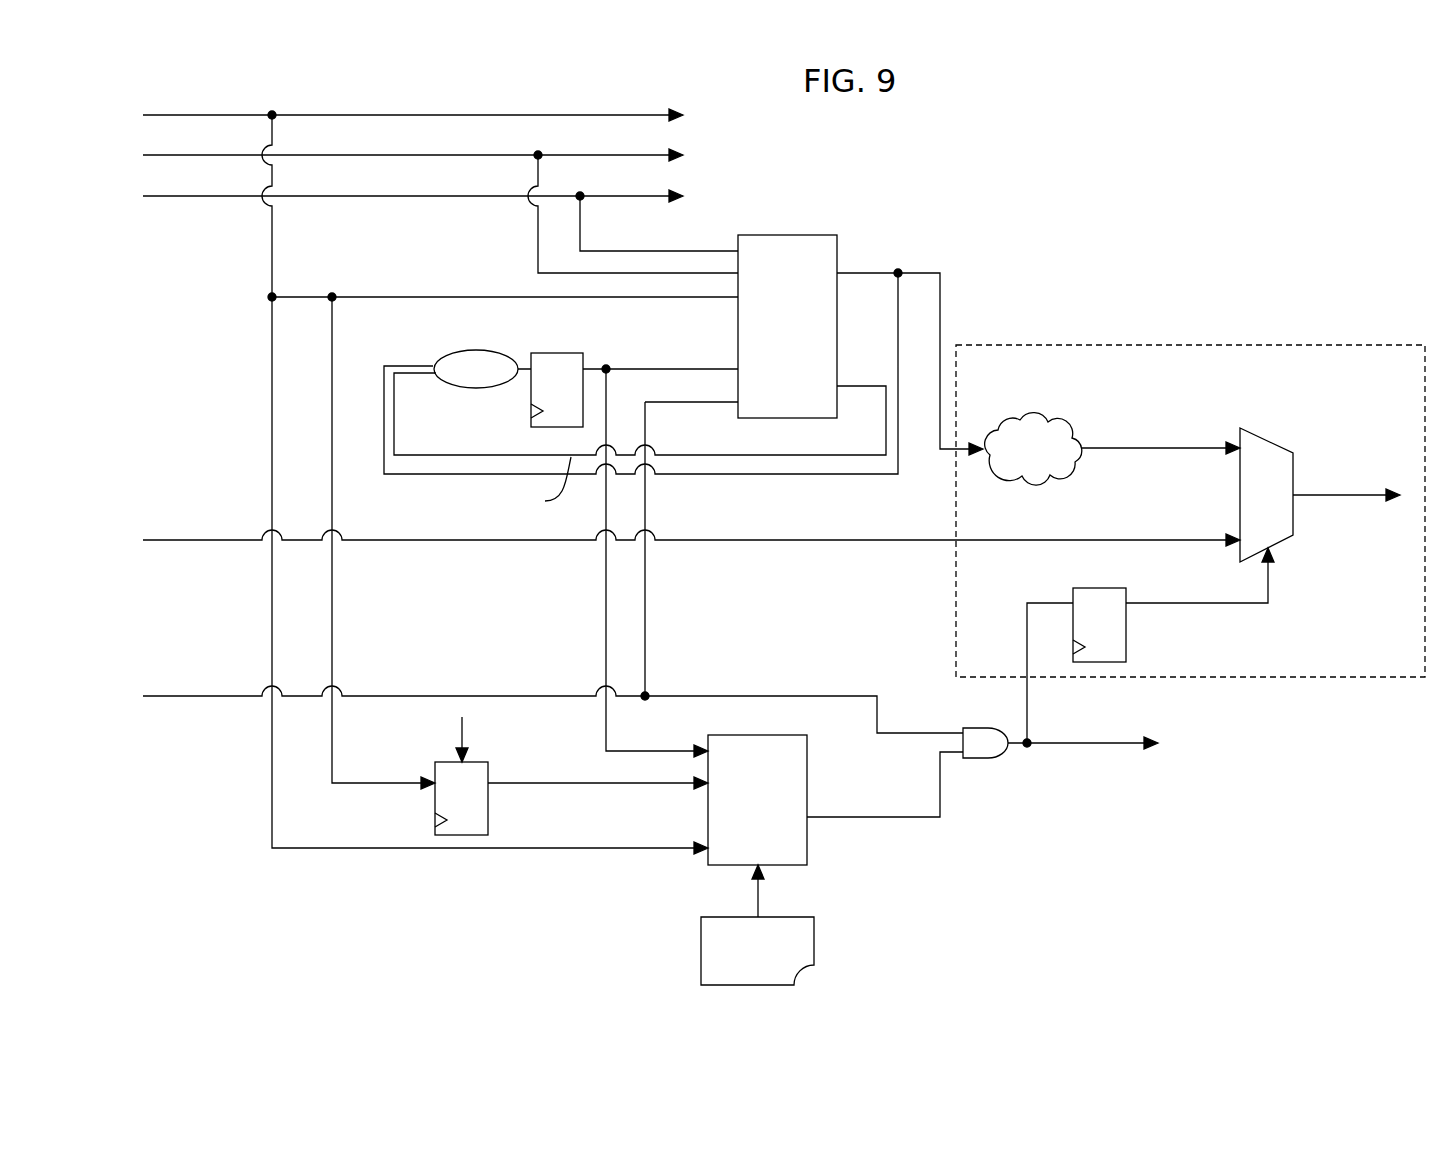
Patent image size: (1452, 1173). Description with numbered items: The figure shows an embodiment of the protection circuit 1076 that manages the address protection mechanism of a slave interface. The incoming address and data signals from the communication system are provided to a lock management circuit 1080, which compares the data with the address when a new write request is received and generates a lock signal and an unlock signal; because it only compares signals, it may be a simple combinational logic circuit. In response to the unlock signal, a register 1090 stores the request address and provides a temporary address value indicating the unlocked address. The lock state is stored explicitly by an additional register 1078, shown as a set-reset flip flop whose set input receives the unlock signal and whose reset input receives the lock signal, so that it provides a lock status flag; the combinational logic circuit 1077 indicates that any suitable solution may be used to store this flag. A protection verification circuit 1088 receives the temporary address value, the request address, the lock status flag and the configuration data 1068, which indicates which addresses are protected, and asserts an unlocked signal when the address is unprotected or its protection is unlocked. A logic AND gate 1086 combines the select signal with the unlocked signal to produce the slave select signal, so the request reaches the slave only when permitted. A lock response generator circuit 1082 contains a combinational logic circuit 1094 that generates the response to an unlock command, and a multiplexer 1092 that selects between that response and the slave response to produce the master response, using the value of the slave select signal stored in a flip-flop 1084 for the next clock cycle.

The protection circuit 1076 is at (1130, 238).
The combinational logic circuit 1077 is at (469, 357).
The set-reset flip flop 1078 is at (556, 353).
The lock management circuit 1080 is at (774, 250).
The lock response generator circuit 1082 is at (1205, 362).
The flip-flop 1084 is at (1112, 632).
The logic AND gate 1086 is at (985, 752).
The protection verification circuit 1088 is at (727, 855).
The register 1090 is at (478, 807).
The multiplexer 1092 is at (1272, 450).
The combinational logic circuit 1094 is at (1022, 470).
The configuration data 1068 is at (798, 943).